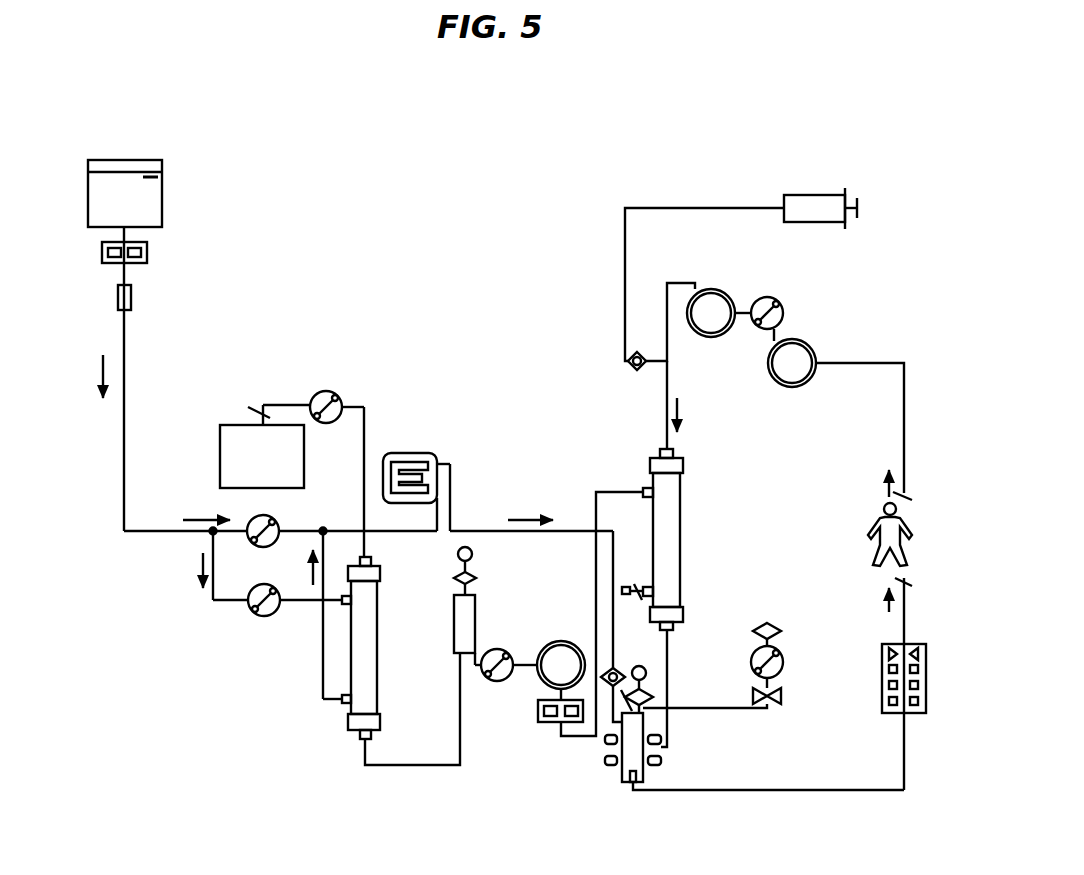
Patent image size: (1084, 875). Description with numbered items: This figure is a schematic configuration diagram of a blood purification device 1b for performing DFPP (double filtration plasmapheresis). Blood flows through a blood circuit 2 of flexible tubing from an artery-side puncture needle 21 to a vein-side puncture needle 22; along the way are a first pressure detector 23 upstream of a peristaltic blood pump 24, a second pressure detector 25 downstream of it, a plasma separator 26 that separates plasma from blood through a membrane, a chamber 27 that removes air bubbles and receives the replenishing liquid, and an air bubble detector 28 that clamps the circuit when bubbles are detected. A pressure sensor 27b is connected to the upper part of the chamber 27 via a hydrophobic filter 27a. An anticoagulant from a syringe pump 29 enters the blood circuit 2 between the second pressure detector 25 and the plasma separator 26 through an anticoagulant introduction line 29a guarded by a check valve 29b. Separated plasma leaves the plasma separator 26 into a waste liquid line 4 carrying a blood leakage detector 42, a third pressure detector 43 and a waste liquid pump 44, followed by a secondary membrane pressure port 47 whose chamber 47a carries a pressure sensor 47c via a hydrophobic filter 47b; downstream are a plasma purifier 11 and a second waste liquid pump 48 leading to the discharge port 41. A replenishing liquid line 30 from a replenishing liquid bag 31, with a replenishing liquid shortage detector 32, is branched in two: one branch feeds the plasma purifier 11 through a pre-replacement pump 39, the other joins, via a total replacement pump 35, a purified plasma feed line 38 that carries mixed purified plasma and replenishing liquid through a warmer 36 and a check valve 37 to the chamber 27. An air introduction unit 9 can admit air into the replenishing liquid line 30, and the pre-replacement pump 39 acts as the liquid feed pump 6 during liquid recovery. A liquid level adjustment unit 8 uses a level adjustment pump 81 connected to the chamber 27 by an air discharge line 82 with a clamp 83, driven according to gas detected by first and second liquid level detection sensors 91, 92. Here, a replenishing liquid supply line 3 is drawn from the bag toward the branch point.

The blood purification device 1b is at (342, 188).
The blood circuit 2 is at (876, 350).
The replenishing liquid supply line 3 is at (110, 497).
The waste liquid line 4 is at (352, 776).
The liquid feed pump 6 is at (266, 630).
The liquid level adjustment unit 8 is at (783, 650).
The air introduction unit 9 is at (122, 232).
The plasma purifier 11 is at (350, 731).
The artery-side puncture needle 21 is at (905, 502).
The vein-side puncture needle 22 is at (905, 582).
The first pressure detector 23 is at (812, 352).
The blood pump 24 is at (779, 300).
The second pressure detector 25 is at (722, 292).
The plasma separator 26 is at (685, 460).
The chamber 27 is at (626, 784).
The hydrophobic filter 27a is at (655, 697).
The pressure sensor 27b is at (647, 672).
The air bubble detector 28 is at (883, 714).
The syringe pump 29 is at (800, 193).
The anticoagulant introduction line 29a is at (623, 256).
The check valve 29b is at (631, 366).
The replenishing liquid line 30 is at (115, 537).
The replenishing liquid bag 31 is at (125, 160).
The replenishing liquid shortage detector 32 is at (113, 285).
The total replacement pump 35 is at (255, 545).
The warmer 36 is at (409, 451).
The check valve 37 is at (606, 672).
The purified plasma feed line 38 is at (485, 519).
The pre-replacement pump 39 is at (252, 612).
The discharge port 41 is at (259, 423).
The blood leakage detector 42 is at (537, 713).
The third pressure detector 43 is at (552, 642).
The waste liquid pump 44 is at (497, 650).
The secondary membrane pressure port 47 is at (439, 606).
The chamber 47a is at (454, 620).
The hydrophobic filter 47b is at (454, 578).
The pressure sensor 47c is at (457, 552).
The second waste liquid pump 48 is at (334, 392).
The level adjustment pump 81 is at (784, 665).
The air discharge line 82 is at (755, 712).
The clamp 83 is at (786, 696).
The first liquid level detection sensor 91 is at (603, 761).
The second liquid level detection sensor 92 is at (603, 740).